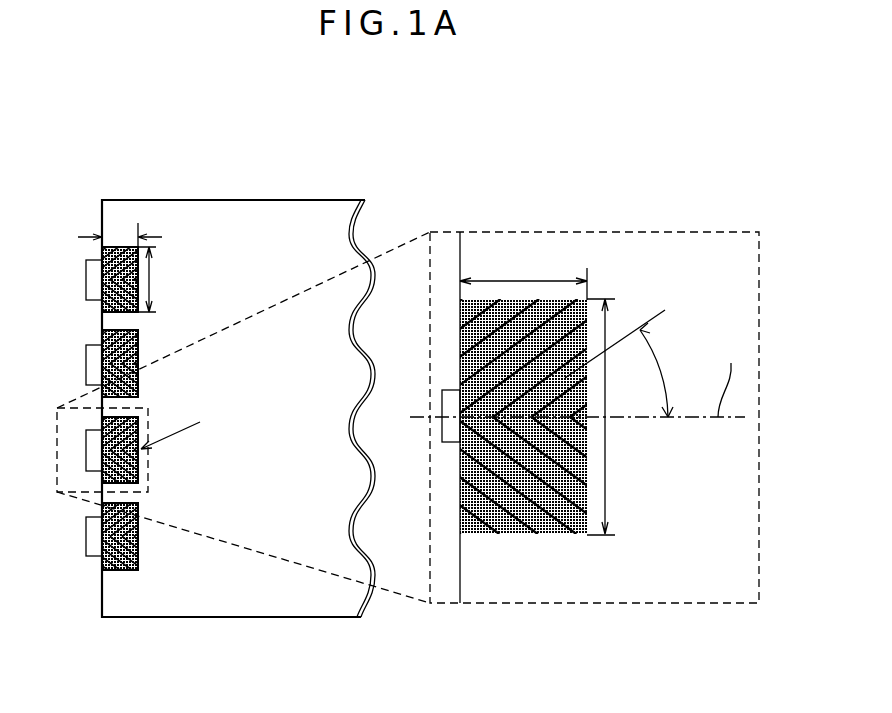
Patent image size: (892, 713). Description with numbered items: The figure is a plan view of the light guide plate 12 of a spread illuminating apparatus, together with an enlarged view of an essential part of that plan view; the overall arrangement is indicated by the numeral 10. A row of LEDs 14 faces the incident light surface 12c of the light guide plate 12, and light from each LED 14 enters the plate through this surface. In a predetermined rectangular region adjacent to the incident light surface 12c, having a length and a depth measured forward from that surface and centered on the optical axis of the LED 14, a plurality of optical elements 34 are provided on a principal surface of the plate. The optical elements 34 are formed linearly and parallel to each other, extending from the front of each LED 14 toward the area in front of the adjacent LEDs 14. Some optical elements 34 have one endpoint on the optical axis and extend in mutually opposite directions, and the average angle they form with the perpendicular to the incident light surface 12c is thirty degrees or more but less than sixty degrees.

The apparatus 10 is at (112, 139).
The light guide plate 12 is at (302, 200).
The incident light surface 12c is at (102, 320).
The LED 14 is at (86, 455).
The optical element 34 is at (507, 522).